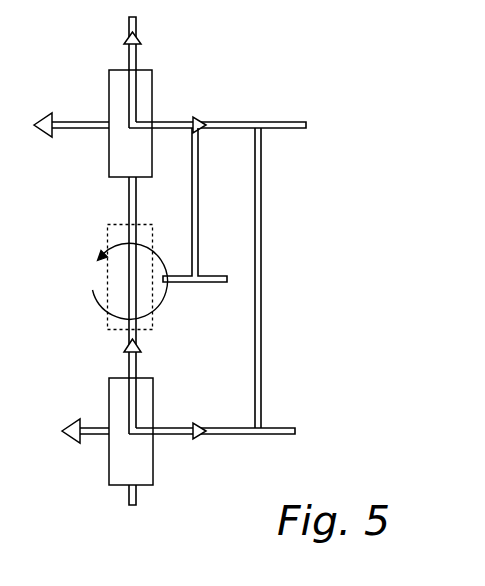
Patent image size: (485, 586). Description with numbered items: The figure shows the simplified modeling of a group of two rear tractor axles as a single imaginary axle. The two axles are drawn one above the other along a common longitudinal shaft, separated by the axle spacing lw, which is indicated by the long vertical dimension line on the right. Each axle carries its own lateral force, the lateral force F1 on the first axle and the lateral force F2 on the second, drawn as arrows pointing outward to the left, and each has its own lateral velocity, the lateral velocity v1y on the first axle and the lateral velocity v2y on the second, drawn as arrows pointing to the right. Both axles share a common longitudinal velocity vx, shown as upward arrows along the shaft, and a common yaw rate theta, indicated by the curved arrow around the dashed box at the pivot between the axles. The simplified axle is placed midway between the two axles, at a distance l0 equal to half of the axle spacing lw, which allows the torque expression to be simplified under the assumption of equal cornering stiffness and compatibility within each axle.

The lateral force F1 is at (62, 107).
The lateral force F2 is at (64, 419).
The common longitudinal velocity vx is at (145, 72).
The lateral velocity v1y is at (217, 105).
The lateral velocity v2y is at (212, 411).
The distance to simplified axle l0 is at (195, 205).
The axle spacing lw is at (274, 278).
The yaw rate theta is at (124, 277).